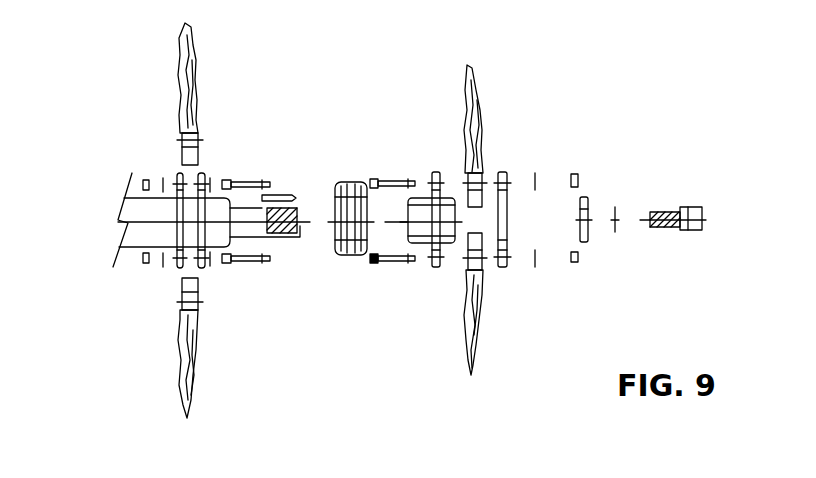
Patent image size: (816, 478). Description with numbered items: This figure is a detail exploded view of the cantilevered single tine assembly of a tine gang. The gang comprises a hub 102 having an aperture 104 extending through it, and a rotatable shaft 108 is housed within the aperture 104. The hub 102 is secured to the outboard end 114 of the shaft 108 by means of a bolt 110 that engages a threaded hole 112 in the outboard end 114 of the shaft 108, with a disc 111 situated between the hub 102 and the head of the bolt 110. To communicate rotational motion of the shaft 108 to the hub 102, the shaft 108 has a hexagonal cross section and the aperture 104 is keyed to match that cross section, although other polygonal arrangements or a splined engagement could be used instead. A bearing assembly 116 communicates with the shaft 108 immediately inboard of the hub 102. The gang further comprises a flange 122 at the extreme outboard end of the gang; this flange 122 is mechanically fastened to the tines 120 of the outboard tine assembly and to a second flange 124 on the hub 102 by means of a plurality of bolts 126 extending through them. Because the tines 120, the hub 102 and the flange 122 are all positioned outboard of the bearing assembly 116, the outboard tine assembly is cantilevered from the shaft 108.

The hub 102 is at (453, 245).
The aperture 104 is at (393, 230).
The rotatable shaft 108 is at (284, 238).
The bolt 110 is at (669, 212).
The disc 111 is at (589, 197).
The threaded hole 112 is at (304, 230).
The outboard end 114 is at (300, 208).
The bearing assembly 116 is at (342, 182).
The tines 120 is at (190, 400).
The flange 122 is at (507, 175).
The second flange 124 is at (434, 172).
The bolts 126 is at (401, 180).